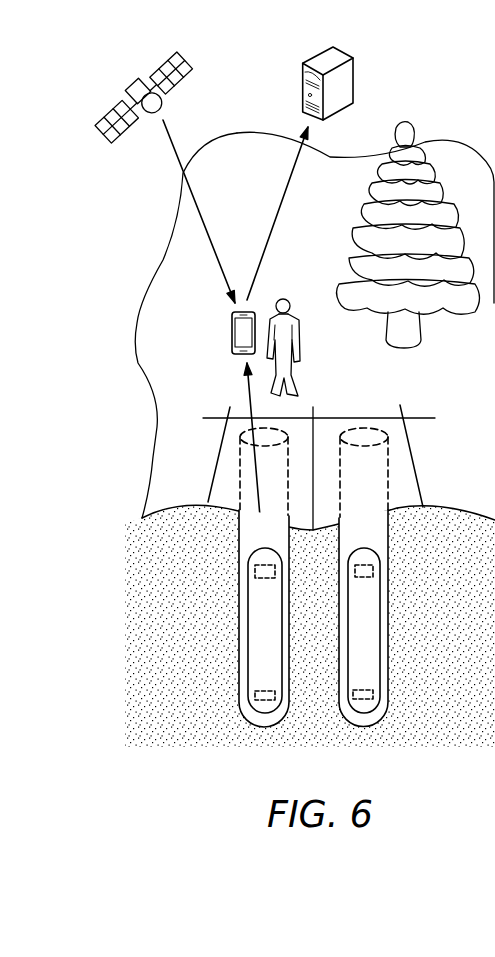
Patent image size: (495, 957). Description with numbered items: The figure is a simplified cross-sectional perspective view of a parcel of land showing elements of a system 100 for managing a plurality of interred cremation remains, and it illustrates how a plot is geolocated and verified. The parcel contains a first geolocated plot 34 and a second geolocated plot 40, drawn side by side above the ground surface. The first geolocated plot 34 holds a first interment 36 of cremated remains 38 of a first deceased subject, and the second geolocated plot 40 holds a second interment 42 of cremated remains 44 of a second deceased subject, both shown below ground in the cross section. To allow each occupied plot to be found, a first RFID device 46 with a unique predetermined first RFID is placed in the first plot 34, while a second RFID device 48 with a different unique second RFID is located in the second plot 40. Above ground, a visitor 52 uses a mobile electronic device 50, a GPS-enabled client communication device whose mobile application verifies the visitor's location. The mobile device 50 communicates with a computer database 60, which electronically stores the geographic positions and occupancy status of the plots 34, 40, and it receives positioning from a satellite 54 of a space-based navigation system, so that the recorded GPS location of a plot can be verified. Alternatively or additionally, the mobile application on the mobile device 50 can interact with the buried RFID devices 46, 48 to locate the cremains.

The system 100 is at (107, 242).
The satellite 54 is at (133, 82).
The computer database 60 is at (342, 52).
The mobile electronic device 50 is at (232, 327).
The visitor 52 is at (293, 327).
The first geolocated plot 34 is at (227, 465).
The second geolocated plot 40 is at (407, 472).
The first interment 36 is at (280, 432).
The second interment 42 is at (360, 430).
The cremated remains 38 is at (268, 663).
The cremated remains 44 is at (370, 667).
The first RFID device 46 is at (267, 580).
The second RFID device 48 is at (362, 578).